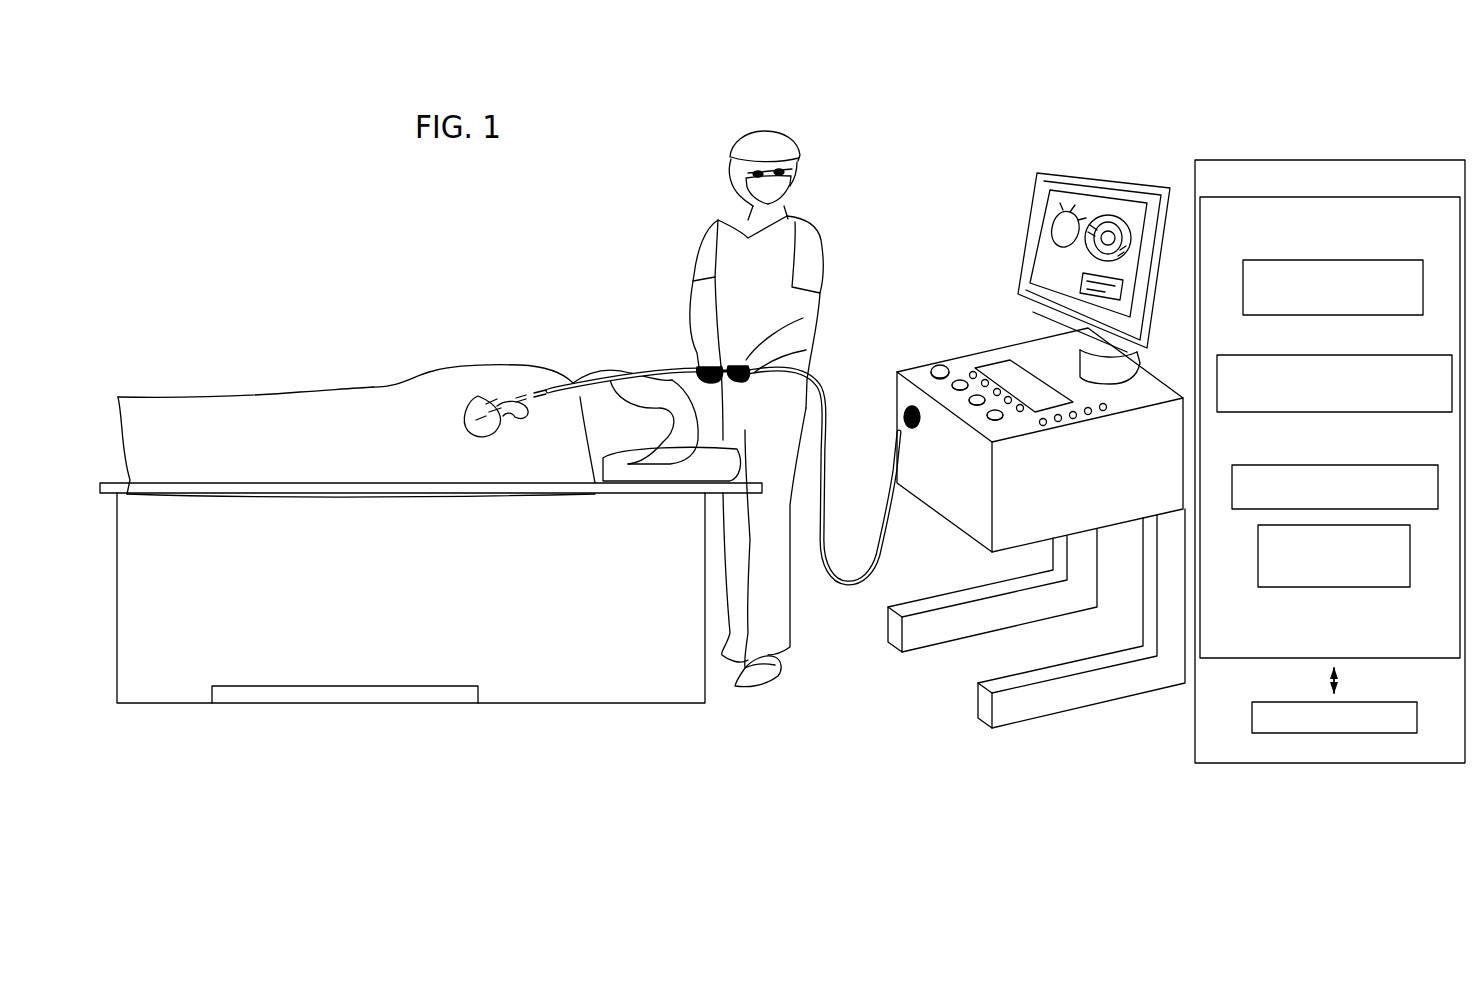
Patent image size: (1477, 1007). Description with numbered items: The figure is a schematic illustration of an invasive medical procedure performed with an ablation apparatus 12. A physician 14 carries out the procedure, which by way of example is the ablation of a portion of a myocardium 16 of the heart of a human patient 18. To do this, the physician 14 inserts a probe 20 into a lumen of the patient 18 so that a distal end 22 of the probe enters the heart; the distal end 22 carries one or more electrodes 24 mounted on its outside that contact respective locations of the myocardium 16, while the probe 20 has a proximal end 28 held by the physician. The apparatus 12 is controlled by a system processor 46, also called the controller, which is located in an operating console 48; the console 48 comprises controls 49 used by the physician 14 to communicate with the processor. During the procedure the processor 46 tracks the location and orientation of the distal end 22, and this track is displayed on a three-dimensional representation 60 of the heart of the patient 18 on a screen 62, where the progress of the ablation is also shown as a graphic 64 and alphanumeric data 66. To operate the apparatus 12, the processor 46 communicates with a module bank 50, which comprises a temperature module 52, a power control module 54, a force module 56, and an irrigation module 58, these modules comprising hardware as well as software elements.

The ablation apparatus 12 is at (912, 165).
The physician 14 is at (767, 135).
The myocardium 16 is at (480, 397).
The human patient 18 is at (208, 416).
The probe 20 is at (590, 387).
The distal end 22 is at (515, 343).
The electrodes 24 is at (432, 343).
The proximal end 28 is at (895, 435).
The system processor 46 is at (1265, 733).
The operating console 48 is at (1327, 160).
The controls 49 is at (948, 364).
The module bank 50 is at (1222, 660).
The temperature module 52 is at (1420, 260).
The power control module 54 is at (1330, 412).
The force module 56 is at (1436, 465).
The irrigation module 58 is at (1412, 538).
The three-dimensional representation 60 is at (1055, 200).
The screen 62 is at (1035, 185).
The graphic 64 is at (1120, 212).
The alphanumeric data 66 is at (1082, 284).